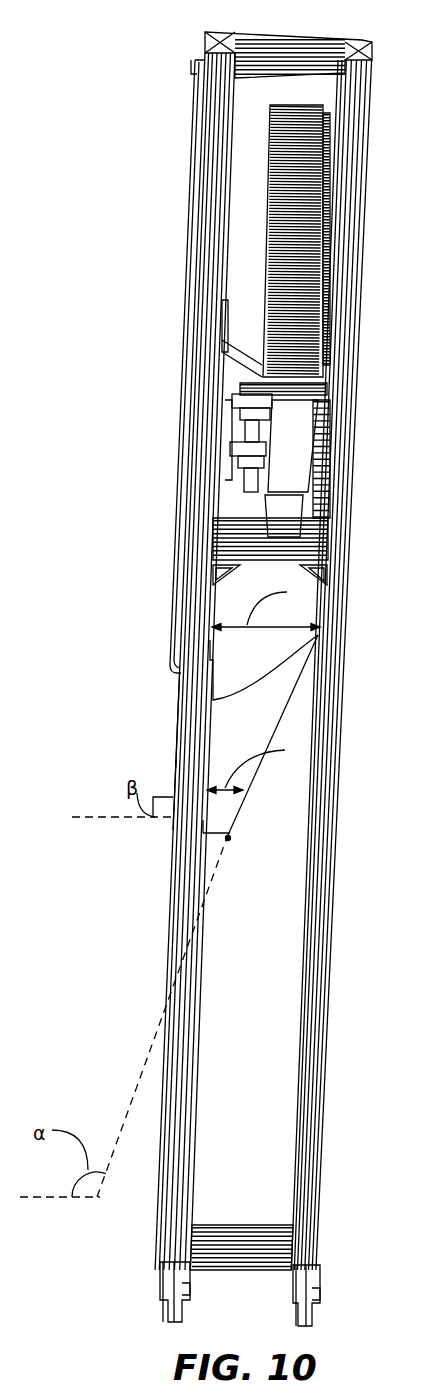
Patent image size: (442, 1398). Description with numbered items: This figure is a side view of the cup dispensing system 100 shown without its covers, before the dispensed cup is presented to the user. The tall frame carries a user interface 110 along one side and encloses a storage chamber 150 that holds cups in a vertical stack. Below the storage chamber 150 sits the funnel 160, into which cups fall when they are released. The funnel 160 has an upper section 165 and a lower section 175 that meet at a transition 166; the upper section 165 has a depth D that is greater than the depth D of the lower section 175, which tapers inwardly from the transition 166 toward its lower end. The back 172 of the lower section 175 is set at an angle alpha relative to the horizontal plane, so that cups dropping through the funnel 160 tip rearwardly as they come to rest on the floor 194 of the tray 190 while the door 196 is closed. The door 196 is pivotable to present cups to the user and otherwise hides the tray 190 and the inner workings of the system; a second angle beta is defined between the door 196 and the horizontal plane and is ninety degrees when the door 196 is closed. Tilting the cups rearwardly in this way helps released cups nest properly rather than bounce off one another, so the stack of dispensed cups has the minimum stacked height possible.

The cup dispensing system 100 is at (158, 55).
The user interface 110 is at (203, 122).
The storage chamber 150 is at (330, 135).
The funnel 160 is at (290, 572).
The upper section 165 is at (287, 612).
The transition 166 is at (287, 670).
The back 172 is at (320, 600).
The lower section 175 is at (250, 722).
The tray 190 is at (171, 692).
The floor 194 is at (211, 841).
The door 196 is at (177, 758).